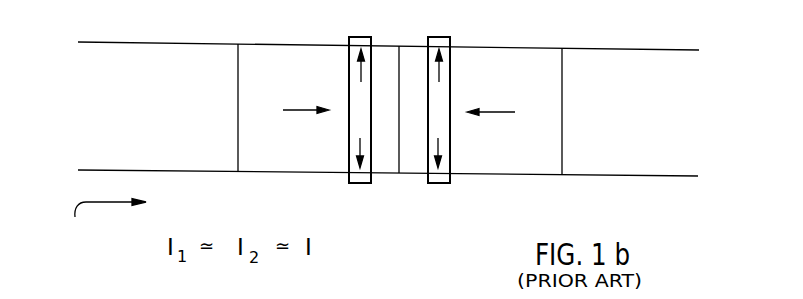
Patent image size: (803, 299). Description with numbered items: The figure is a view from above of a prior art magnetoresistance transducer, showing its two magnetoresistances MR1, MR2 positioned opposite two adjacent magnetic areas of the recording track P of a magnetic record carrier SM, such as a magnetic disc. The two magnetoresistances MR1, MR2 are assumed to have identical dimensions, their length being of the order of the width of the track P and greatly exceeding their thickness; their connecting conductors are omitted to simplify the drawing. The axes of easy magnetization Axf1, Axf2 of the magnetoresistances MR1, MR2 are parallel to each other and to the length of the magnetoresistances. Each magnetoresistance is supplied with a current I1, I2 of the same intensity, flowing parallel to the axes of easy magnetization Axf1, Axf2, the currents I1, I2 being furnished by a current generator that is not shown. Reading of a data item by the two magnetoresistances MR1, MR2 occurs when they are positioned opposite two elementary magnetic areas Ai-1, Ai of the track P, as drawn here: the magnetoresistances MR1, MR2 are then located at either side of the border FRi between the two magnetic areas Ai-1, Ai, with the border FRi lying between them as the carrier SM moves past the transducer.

The track P is at (648, 177).
The magnetic record carrier SM is at (110, 219).
The elementary magnetic area Ai-1 is at (300, 172).
The elementary magnetic area Ai is at (495, 173).
The border FRi is at (399, 173).
The magnetoresistance MR1 is at (364, 37).
The magnetoresistance MR2 is at (440, 37).
The current I1 is at (360, 108).
The current I2 is at (438, 108).
The axis of easy magnetization Axf1 is at (349, 136).
The axis of easy magnetization Axf2 is at (439, 137).